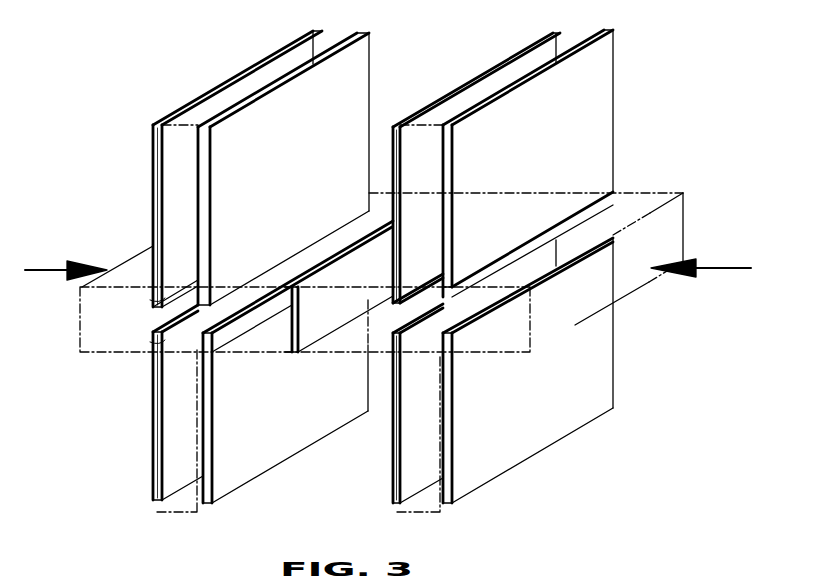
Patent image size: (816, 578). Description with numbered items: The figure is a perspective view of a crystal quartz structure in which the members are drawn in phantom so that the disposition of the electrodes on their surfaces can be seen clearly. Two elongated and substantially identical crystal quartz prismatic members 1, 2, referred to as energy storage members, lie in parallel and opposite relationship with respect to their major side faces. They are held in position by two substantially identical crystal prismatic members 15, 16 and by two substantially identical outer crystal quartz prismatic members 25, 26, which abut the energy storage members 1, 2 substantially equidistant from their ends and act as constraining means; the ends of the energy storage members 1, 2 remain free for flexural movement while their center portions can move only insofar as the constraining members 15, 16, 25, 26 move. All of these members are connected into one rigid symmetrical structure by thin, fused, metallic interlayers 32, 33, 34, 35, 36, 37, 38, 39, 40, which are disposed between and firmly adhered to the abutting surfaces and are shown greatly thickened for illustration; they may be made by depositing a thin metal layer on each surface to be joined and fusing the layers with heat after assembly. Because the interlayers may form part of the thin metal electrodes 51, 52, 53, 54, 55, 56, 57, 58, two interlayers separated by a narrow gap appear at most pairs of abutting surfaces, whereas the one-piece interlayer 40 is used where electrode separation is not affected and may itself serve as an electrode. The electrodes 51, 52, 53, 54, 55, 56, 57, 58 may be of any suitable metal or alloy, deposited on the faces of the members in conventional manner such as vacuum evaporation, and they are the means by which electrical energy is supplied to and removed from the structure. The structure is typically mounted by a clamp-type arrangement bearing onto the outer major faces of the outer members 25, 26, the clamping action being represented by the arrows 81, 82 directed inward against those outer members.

The crystal quartz prismatic member 1 is at (172, 203).
The crystal quartz prismatic member 2 is at (427, 496).
The crystal prismatic member 15 is at (236, 345).
The crystal prismatic member 16 is at (330, 340).
The outer crystal quartz prismatic member 25 is at (96, 319).
The outer crystal quartz prismatic member 26 is at (669, 214).
The metallic interlayer 32 is at (167, 296).
The metallic interlayer 33 is at (167, 340).
The metallic interlayer 34 is at (284, 251).
The metallic interlayer 35 is at (250, 318).
The metallic interlayer 36 is at (415, 286).
The metallic interlayer 37 is at (403, 337).
The metallic interlayer 38 is at (607, 198).
The metallic interlayer 39 is at (614, 256).
The metallic interlayer 40 is at (327, 325).
The electrode 51 is at (189, 167).
The electrode 52 is at (187, 392).
The electrode 53 is at (288, 126).
The electrode 54 is at (270, 404).
The electrode 55 is at (428, 177).
The electrode 56 is at (427, 412).
The electrode 57 is at (545, 134).
The electrode 58 is at (531, 396).
The arrow 81 is at (46, 268).
The arrow 82 is at (740, 268).